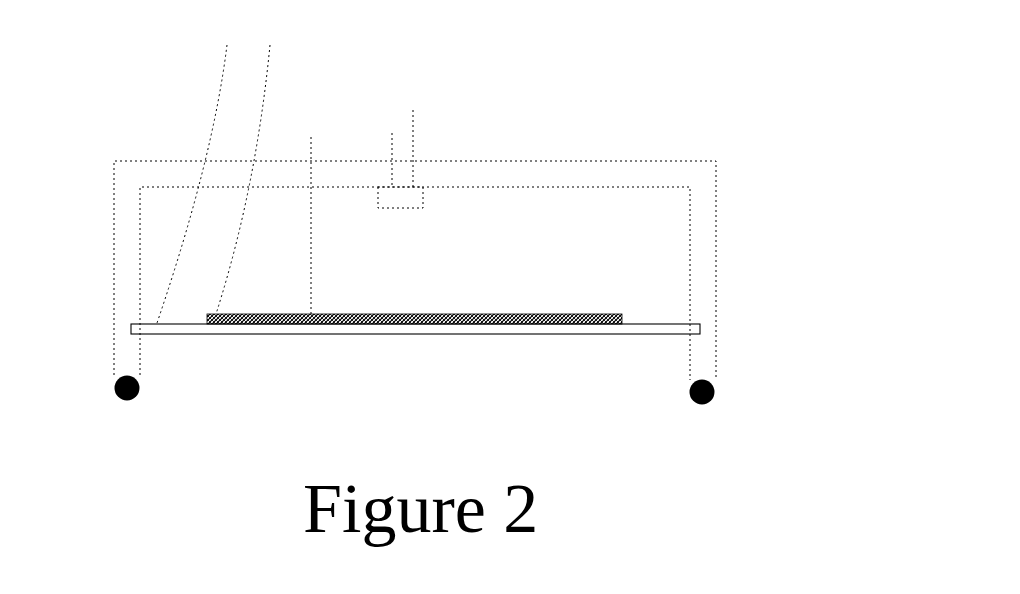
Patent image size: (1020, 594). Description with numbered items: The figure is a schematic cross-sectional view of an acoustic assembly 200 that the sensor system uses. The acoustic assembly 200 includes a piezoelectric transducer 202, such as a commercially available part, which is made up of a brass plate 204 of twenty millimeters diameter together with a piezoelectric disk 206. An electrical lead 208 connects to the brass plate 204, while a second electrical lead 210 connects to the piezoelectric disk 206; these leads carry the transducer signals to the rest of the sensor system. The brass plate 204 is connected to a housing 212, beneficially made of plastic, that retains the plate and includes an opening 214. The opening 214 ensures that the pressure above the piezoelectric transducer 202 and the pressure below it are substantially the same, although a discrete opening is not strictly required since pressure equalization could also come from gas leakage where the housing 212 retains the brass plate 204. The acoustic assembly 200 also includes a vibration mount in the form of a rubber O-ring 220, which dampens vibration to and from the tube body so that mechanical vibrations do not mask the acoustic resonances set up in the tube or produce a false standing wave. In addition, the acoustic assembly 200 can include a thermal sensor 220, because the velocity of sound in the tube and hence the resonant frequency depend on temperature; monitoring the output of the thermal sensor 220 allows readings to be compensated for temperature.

The acoustic assembly 200 is at (399, 224).
The piezoelectric transducer 202 is at (642, 302).
The brass plate 204 is at (387, 337).
The piezoelectric disk 206 is at (318, 212).
The electrical lead 208 is at (217, 70).
The electrical lead 210 is at (273, 80).
The housing 212 is at (112, 202).
The opening 214 is at (631, 187).
The rubber O-ring 220 is at (425, 201).